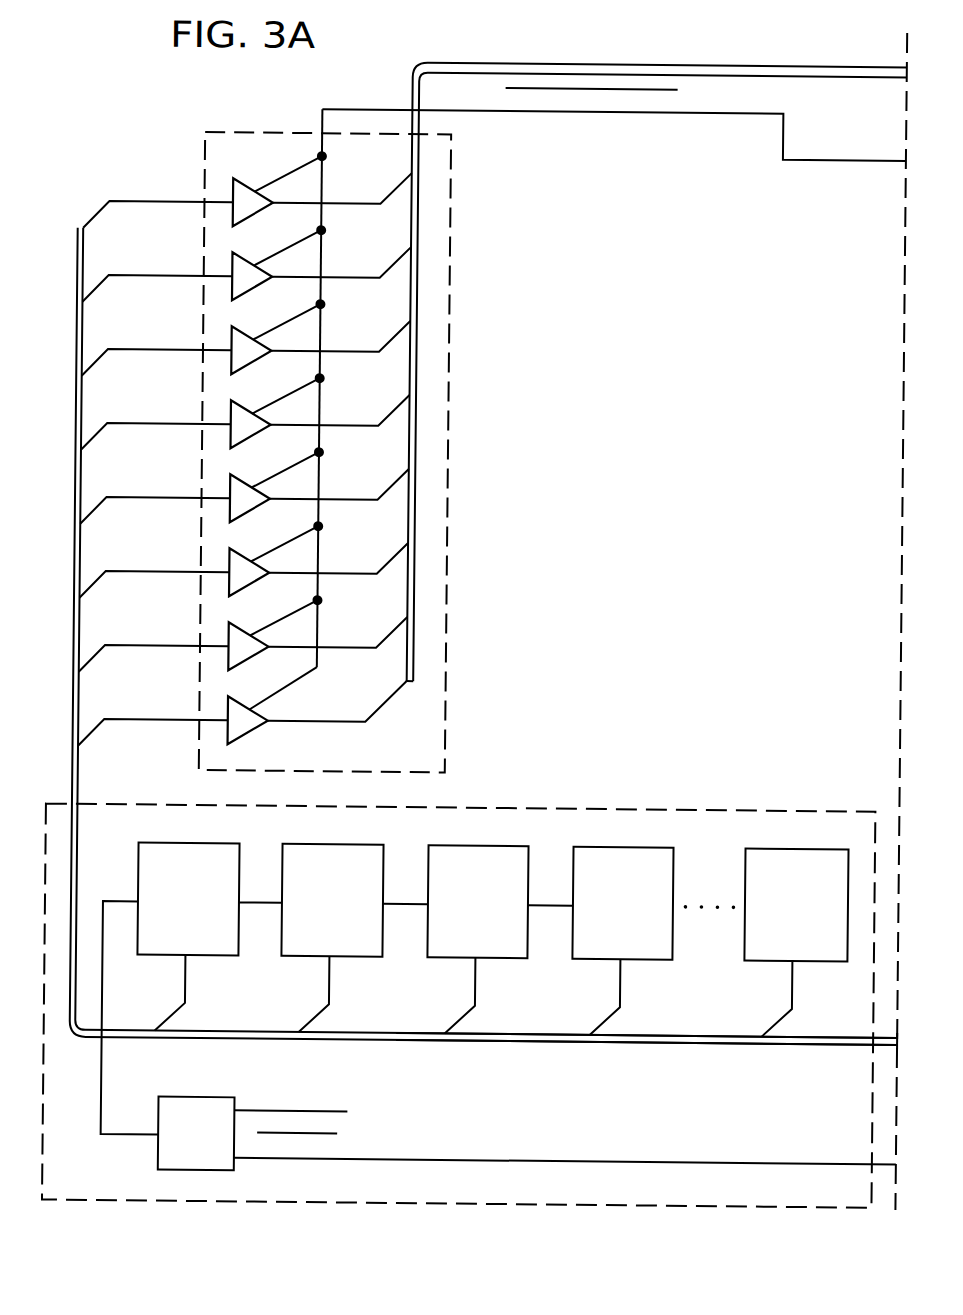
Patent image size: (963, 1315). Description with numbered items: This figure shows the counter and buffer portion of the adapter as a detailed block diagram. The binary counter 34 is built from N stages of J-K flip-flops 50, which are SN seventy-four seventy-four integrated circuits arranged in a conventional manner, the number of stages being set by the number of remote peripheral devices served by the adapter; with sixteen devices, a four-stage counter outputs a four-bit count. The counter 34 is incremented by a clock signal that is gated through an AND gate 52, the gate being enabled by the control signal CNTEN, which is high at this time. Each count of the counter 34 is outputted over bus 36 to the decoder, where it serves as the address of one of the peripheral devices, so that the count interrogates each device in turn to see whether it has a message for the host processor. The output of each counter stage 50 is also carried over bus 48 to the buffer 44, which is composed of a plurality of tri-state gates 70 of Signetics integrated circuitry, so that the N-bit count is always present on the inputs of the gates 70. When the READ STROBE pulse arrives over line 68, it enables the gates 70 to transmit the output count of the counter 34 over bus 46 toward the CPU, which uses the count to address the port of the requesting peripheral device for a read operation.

The binary counter 34 is at (471, 975).
The bus 36 is at (752, 1037).
The buffer 44 is at (449, 318).
The bus 46 is at (771, 70).
The bus 48 is at (81, 244).
The J-K flip-flop 50 is at (652, 848).
The AND gate 52 is at (209, 1105).
The line 68 is at (778, 137).
The tri-state gate 70 is at (242, 190).